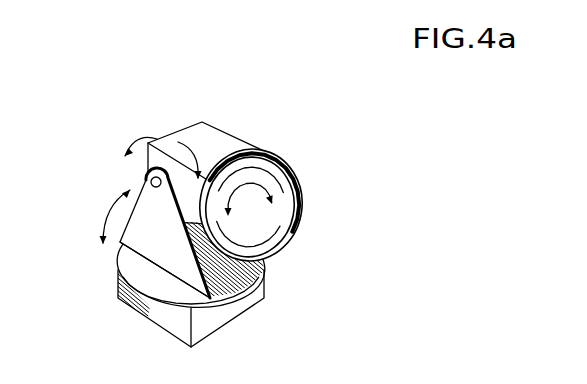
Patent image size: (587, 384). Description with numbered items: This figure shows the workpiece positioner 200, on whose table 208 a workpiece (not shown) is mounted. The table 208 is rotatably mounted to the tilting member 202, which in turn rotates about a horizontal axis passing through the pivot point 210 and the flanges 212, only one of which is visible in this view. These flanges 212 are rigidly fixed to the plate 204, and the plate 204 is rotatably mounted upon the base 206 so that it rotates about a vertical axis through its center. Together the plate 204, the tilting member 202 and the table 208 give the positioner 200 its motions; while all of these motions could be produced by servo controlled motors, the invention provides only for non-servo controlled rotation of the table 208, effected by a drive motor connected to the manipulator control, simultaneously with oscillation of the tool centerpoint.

The workpiece positioner 200 is at (237, 93).
The tilting member 202 is at (194, 122).
The plate 204 is at (118, 247).
The base 206 is at (117, 280).
The table 208 is at (263, 150).
The pivot point 210 is at (153, 178).
The flange 212 is at (168, 246).